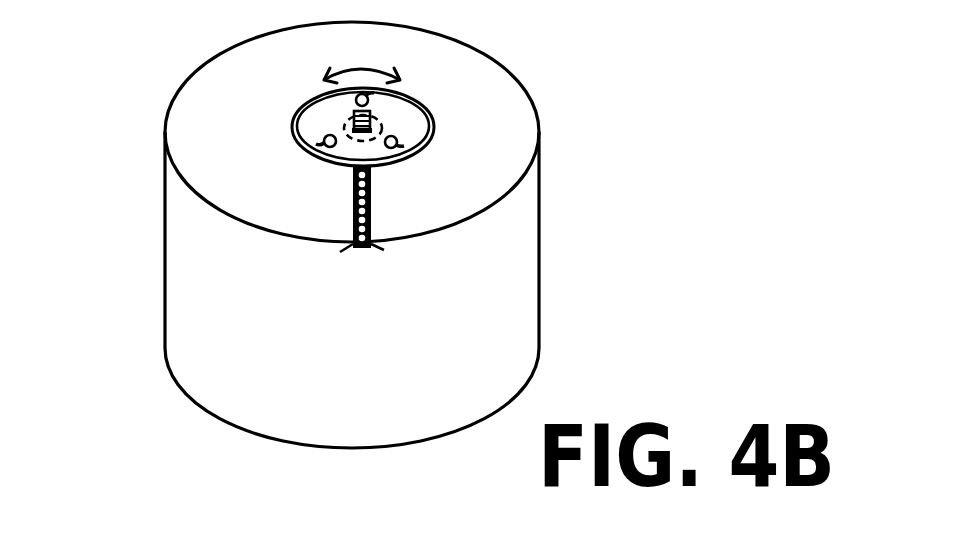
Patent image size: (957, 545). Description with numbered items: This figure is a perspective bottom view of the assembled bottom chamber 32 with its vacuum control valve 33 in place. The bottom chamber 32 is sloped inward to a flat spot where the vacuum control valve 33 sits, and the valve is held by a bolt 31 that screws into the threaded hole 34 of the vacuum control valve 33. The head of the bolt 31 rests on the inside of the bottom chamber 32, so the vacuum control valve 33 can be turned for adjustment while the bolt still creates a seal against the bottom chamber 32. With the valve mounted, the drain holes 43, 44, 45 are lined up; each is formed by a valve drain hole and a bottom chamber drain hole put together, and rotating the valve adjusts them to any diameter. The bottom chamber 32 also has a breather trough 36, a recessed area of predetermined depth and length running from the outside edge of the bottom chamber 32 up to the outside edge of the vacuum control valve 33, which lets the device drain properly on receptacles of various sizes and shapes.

The bolt 31 is at (365, 113).
The bottom chamber 32 is at (540, 298).
The vacuum control valve 33 is at (352, 126).
The threaded hole 34 is at (352, 128).
The breather trough 36 is at (358, 246).
The drain hole 43 is at (366, 97).
The drain hole 44 is at (324, 143).
The drain hole 45 is at (397, 144).